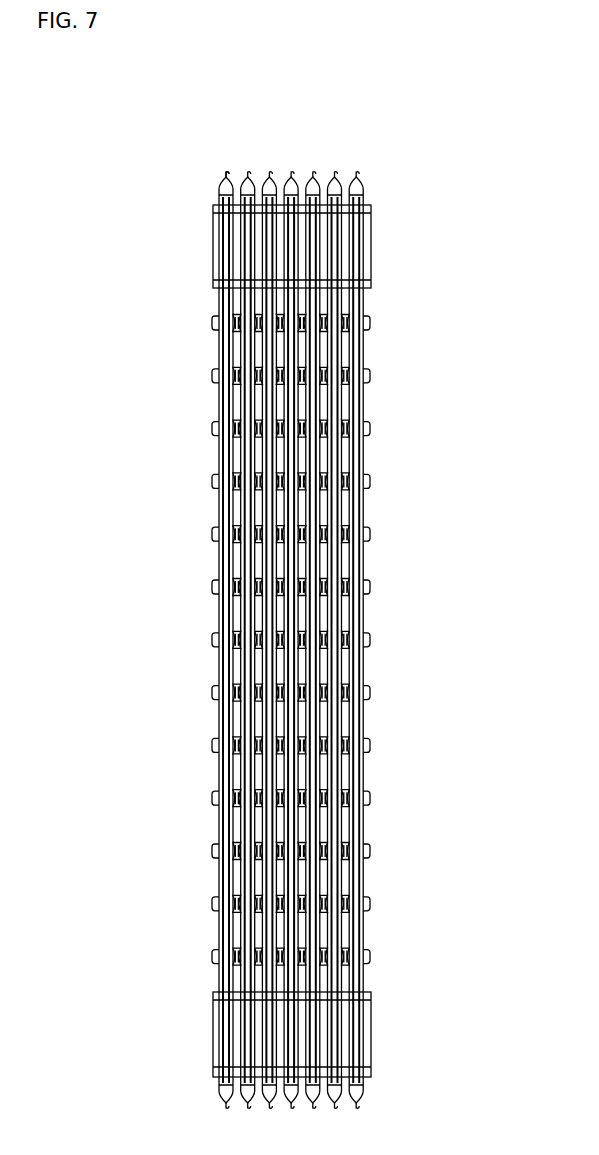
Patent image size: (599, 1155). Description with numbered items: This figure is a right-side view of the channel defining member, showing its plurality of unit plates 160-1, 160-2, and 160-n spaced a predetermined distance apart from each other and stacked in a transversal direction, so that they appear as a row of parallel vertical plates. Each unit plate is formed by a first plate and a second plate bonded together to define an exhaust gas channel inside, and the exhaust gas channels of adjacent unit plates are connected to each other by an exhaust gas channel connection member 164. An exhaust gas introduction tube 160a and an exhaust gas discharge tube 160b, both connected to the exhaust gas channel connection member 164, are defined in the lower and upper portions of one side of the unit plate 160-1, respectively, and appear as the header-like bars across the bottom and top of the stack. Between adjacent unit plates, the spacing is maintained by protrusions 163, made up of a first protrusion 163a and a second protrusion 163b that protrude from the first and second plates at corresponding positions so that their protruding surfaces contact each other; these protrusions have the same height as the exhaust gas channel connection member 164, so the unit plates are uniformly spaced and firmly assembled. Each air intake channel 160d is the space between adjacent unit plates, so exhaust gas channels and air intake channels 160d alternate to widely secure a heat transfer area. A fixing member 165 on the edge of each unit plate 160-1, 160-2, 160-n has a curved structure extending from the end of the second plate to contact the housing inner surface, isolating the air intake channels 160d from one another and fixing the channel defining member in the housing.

The unit plate 160-1 is at (230, 178).
The unit plate 160-2 is at (250, 178).
The unit plate 160-n is at (357, 178).
The fixing member 165 is at (226, 174).
The exhaust gas discharge tube 160b is at (213, 240).
The exhaust gas introduction tube 160a is at (213, 1032).
The exhaust gas channel connection member 164 is at (233, 263).
The air intake channel 160d is at (345, 350).
The protrusions 163 is at (211, 353).
The first protrusion 163a is at (230, 326).
The second protrusion 163b is at (240, 351).